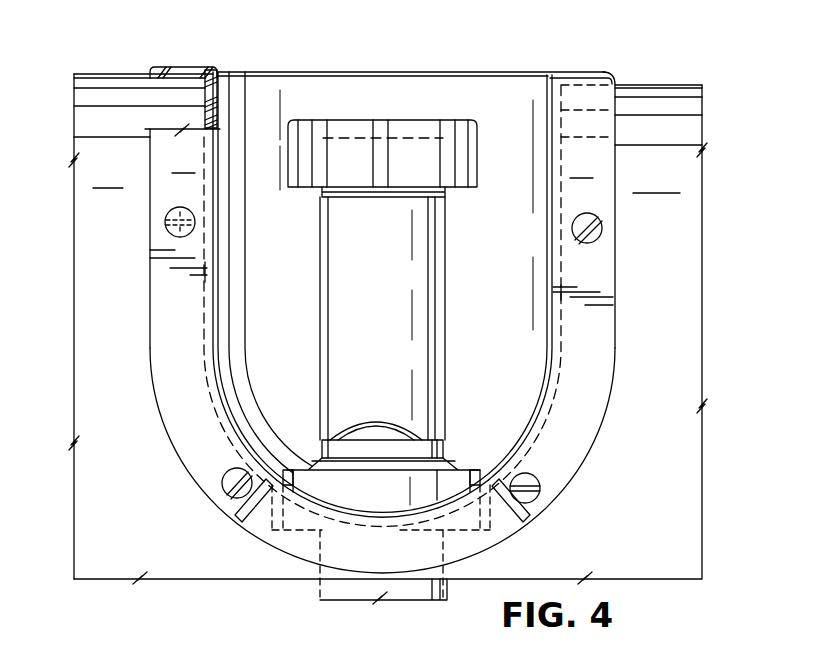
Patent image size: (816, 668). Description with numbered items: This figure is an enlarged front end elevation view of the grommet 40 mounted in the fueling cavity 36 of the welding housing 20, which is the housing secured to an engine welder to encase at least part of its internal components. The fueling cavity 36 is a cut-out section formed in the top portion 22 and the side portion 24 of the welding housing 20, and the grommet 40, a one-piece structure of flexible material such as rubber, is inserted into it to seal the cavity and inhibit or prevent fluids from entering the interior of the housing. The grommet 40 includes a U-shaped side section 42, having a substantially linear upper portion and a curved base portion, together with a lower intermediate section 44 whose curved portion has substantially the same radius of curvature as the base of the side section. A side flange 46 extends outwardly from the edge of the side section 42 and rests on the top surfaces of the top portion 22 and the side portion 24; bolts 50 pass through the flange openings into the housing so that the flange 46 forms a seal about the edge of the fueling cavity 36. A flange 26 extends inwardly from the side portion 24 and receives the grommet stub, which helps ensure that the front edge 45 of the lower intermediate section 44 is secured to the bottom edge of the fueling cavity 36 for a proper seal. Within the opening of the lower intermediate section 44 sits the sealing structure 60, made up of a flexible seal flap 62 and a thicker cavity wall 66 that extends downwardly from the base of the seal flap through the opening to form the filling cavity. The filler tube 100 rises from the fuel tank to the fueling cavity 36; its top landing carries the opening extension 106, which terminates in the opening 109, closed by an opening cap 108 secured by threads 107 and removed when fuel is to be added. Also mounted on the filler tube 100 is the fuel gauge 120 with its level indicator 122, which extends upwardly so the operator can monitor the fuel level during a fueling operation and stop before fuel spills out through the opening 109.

The welding housing 20 is at (669, 74).
The top portion 22 is at (110, 75).
The side portion 24 is at (92, 385).
The flange 26 is at (472, 548).
The fueling cavity 36 is at (213, 80).
The grommet 40 is at (618, 264).
The side section 42 is at (410, 87).
The lower intermediate section 44 is at (435, 497).
The front edge 45 is at (410, 515).
The side flange 46 is at (183, 65).
The bolts 50 is at (168, 229).
The sealing structure 60 is at (373, 506).
The seal flap 62 is at (313, 460).
The cavity wall 66 is at (327, 485).
The filler tube 100 is at (310, 595).
The opening extension 106 is at (443, 293).
The threads 107 is at (435, 198).
The opening cap 108 is at (455, 130).
The opening 109 is at (348, 138).
The fuel gauge 120 is at (426, 423).
The level indicator 122 is at (373, 422).